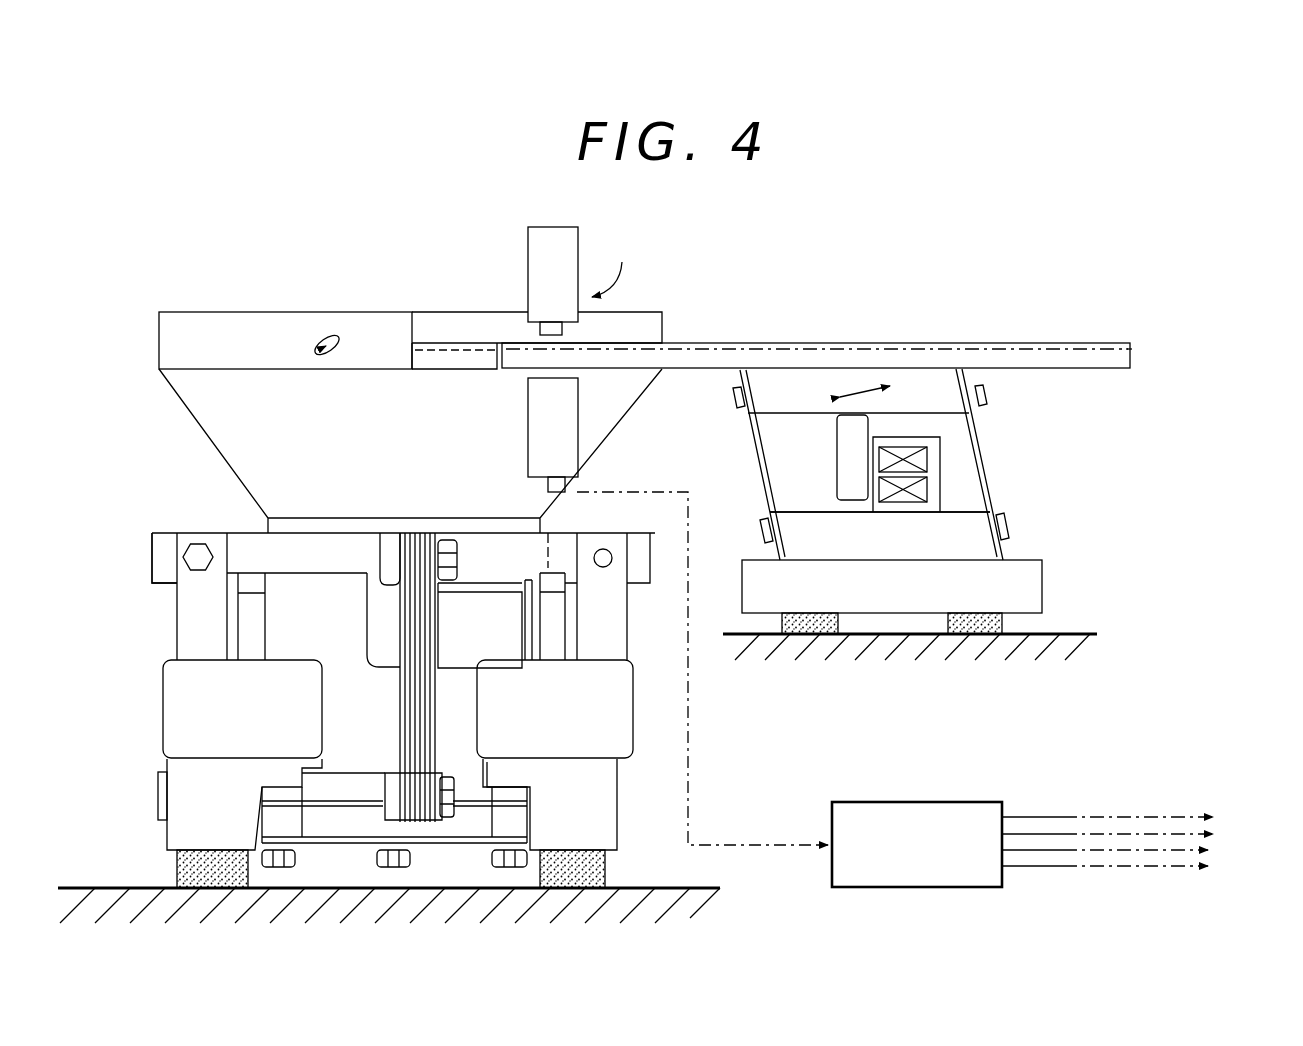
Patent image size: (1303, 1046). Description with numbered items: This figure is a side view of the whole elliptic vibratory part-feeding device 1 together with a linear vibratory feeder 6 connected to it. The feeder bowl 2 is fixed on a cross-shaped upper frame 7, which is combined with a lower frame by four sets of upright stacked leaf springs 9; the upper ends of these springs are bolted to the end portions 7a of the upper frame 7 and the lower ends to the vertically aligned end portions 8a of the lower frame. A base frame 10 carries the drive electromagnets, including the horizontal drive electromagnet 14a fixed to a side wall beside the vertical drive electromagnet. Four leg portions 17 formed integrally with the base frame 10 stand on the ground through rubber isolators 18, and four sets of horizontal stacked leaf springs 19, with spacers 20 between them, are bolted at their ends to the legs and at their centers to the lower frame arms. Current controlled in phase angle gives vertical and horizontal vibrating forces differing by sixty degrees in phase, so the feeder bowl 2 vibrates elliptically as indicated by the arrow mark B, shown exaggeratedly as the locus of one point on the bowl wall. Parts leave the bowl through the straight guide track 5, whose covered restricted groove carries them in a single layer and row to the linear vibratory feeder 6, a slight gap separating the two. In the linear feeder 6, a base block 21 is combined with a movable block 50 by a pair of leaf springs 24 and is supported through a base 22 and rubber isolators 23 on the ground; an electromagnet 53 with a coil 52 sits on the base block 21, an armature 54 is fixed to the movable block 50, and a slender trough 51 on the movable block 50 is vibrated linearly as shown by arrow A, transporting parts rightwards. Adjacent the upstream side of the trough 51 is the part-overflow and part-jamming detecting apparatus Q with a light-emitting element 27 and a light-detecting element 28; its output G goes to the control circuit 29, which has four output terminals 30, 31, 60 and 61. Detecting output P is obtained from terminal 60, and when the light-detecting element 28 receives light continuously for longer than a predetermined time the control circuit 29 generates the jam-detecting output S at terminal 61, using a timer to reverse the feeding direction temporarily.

The elliptic vibratory part-feeding device 1 is at (374, 268).
The feeder bowl 2 is at (240, 330).
The arrow mark B is at (327, 330).
The straight guide track 5 is at (458, 360).
The light-emitting element 27 is at (540, 252).
The part-overflow detecting/part-jamming detecting apparatus Q is at (614, 264).
The light-detecting element 28 is at (540, 420).
The linear vibratory feeder 6 is at (978, 342).
The slender trough 51 is at (1133, 352).
The output G is at (770, 845).
The movable block 50 is at (950, 397).
The leaf springs 24 is at (755, 442).
The armature 54 is at (855, 465).
The coil 52 is at (915, 455).
The electromagnet 53 is at (935, 488).
The base block 21 is at (975, 545).
The arrow A is at (860, 392).
The base 22 is at (1030, 585).
The rubber isolators 23 is at (1005, 625).
The cross-shaped upper frame 7 is at (305, 548).
The end portions 7a is at (390, 548).
The upright stacked leaf springs 9 is at (190, 620).
The base frame 10 is at (250, 640).
The horizontal drive electromagnet 14a is at (490, 640).
The end portions 8a is at (393, 795).
The leg portions 17 is at (185, 800).
The rubber isolators 18 is at (175, 872).
The horizontal stacked leaf springs 19 is at (480, 807).
The spacers 20 is at (372, 822).
The control circuit 29 is at (912, 805).
The output terminal 30 is at (1040, 817).
The output terminal 31 is at (1125, 834).
The output terminal 60 is at (1050, 866).
The output terminal 61 is at (1128, 866).
The detecting output P is at (1216, 850).
The jam-detecting output S is at (1216, 866).